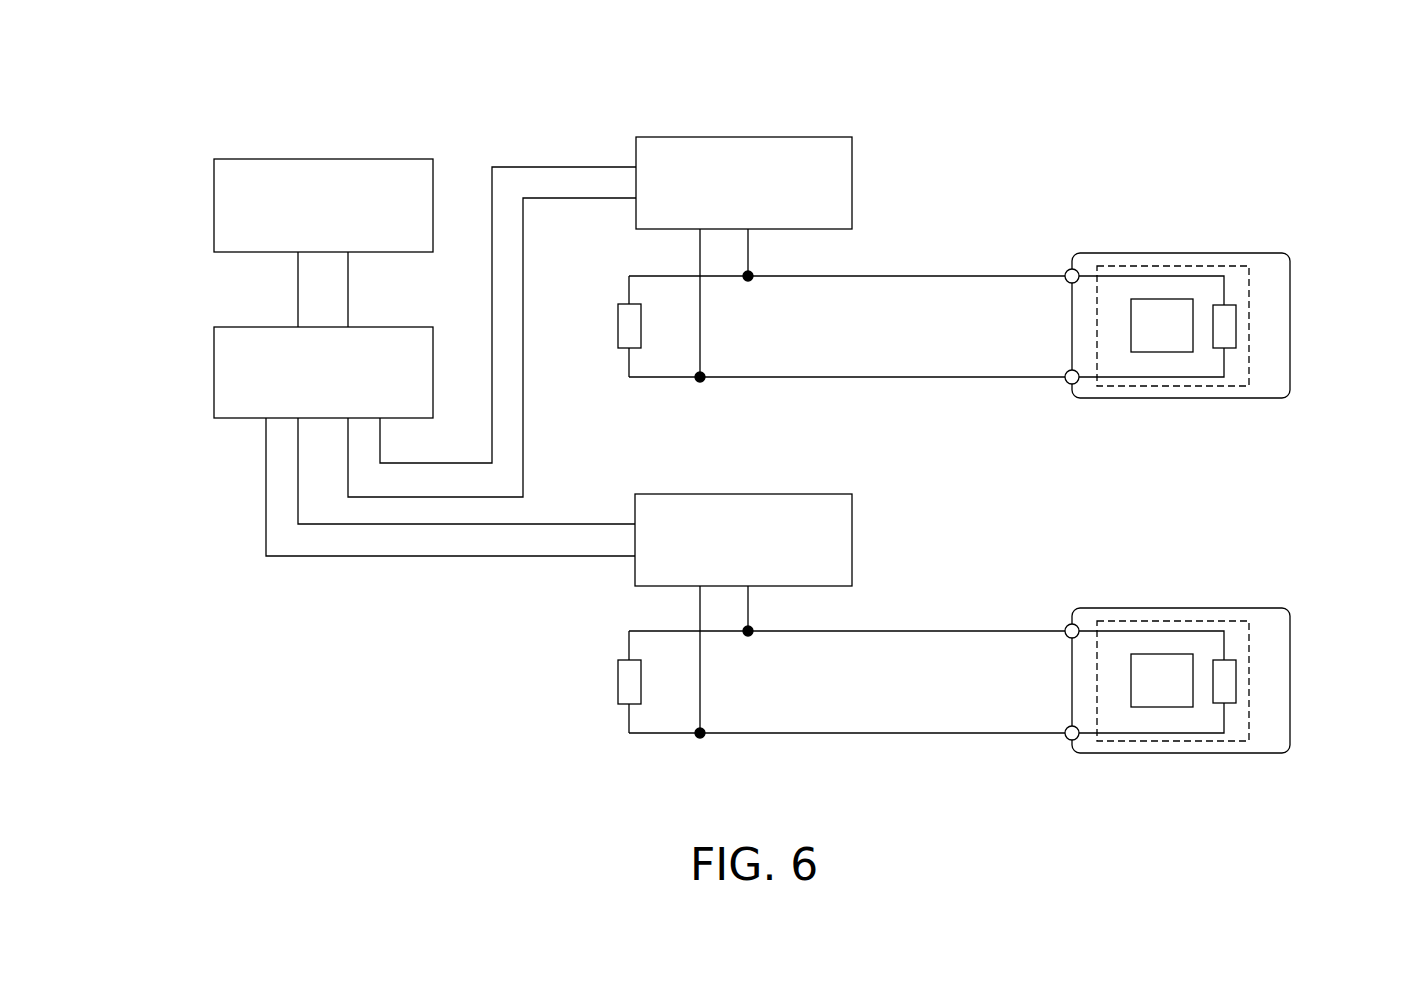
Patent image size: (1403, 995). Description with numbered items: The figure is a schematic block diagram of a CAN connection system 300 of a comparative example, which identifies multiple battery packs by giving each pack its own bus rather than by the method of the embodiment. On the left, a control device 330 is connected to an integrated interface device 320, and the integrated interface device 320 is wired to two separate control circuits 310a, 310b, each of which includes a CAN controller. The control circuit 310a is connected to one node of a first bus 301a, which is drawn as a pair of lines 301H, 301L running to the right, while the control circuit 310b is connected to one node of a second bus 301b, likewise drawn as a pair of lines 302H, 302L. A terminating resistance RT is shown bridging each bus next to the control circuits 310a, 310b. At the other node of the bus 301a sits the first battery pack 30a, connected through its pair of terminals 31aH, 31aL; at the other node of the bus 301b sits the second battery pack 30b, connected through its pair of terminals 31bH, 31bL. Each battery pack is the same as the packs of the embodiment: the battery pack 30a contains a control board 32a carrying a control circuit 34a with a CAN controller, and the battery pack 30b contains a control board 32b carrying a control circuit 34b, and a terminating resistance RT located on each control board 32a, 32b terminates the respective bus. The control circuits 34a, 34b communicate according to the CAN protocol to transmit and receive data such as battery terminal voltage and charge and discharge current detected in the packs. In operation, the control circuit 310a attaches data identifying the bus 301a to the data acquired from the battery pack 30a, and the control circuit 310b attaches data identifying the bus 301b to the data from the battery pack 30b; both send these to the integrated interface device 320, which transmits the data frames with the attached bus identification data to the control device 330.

The CAN connection system 300 is at (1113, 83).
The control device 330 is at (214, 204).
The integrated interface device 320 is at (214, 371).
The control circuit 310a is at (728, 137).
The control circuit 310b is at (728, 494).
The terminating resistance RT is at (618, 325).
The bus 301a is at (847, 377).
The first cable high-side line 301H is at (862, 278).
The first cable low-side line 301L is at (933, 379).
The bus 301b is at (847, 732).
The second cable high-side line 302H is at (862, 633).
The second cable low-side line 302L is at (933, 735).
The first battery pack 30a is at (1195, 327).
The second battery pack 30b is at (1195, 682).
The terminal 31aH is at (1070, 268).
The terminal 31aL is at (1070, 385).
The terminal 31bH is at (1070, 623).
The terminal 31bL is at (1070, 740).
The control board 32a is at (1215, 266).
The control board 32b is at (1215, 621).
The control circuit 34a is at (1155, 299).
The control circuit 34b is at (1155, 654).